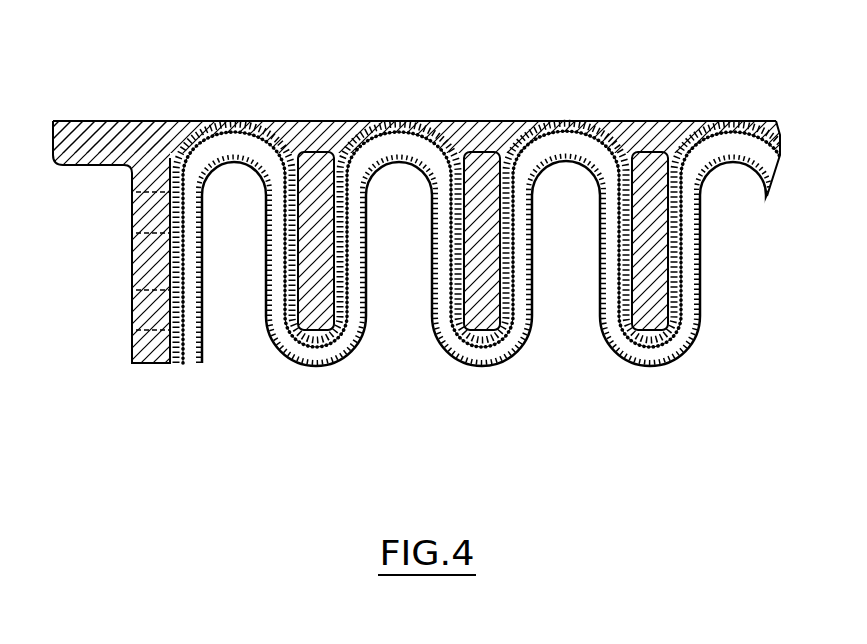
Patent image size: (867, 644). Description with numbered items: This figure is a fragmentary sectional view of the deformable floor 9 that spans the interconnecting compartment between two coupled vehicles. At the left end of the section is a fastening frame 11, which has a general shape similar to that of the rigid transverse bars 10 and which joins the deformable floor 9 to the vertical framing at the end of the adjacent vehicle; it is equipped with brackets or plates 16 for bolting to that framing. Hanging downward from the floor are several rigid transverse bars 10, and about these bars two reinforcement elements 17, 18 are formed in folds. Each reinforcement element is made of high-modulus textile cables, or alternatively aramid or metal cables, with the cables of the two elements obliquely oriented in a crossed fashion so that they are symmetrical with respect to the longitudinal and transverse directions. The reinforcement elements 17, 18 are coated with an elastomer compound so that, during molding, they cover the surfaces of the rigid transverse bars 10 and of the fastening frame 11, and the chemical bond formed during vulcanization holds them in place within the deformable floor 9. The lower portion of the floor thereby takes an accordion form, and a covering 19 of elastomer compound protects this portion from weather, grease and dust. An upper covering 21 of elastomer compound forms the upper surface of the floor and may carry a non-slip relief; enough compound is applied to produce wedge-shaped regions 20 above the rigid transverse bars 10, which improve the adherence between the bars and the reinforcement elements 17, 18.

The deformable floor 9 is at (419, 197).
The rigid transverse bars 10 is at (484, 299).
The fastening frame 11 is at (128, 142).
The brackets or plates 16 is at (122, 270).
The reinforcement element 17 is at (275, 349).
The reinforcement element 18 is at (291, 358).
The covering 19 is at (674, 370).
The wedge-shaped regions 20 is at (678, 128).
The upper covering 21 is at (492, 124).